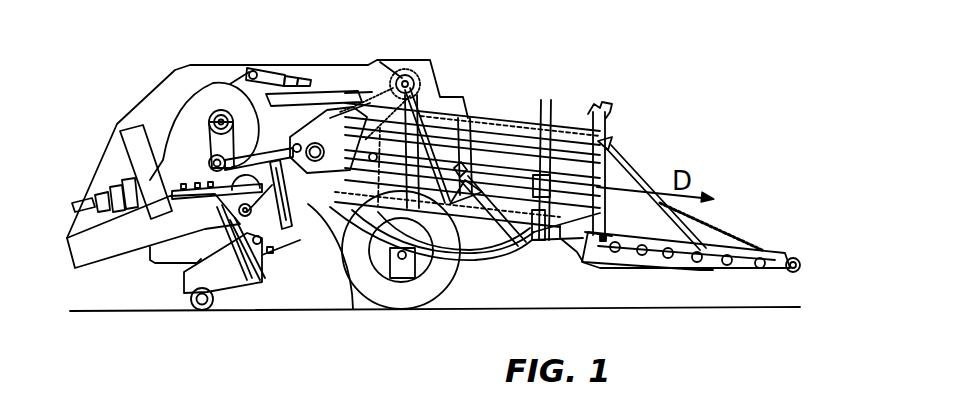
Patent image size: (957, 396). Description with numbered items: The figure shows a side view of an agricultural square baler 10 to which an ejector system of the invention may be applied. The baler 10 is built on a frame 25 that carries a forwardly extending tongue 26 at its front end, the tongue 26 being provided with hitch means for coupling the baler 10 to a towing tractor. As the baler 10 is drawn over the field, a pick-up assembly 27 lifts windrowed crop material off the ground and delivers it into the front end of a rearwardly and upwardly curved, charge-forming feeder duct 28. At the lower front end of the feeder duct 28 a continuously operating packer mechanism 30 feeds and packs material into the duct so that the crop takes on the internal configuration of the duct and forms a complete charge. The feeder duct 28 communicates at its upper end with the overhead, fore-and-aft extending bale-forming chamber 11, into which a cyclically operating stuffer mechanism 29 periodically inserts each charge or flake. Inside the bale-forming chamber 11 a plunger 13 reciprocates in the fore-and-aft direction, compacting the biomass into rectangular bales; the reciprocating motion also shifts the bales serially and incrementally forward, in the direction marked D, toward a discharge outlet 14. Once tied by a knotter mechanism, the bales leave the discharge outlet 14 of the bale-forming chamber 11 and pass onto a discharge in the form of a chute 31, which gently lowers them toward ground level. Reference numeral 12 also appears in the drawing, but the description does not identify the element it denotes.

The agricultural baler 10 is at (551, 58).
The bale-forming chamber 11 is at (557, 148).
The frame 12 is at (558, 238).
The plunger 13 is at (324, 125).
The discharge outlet 14 is at (607, 178).
The frame 25 is at (306, 176).
The tongue 26 is at (122, 246).
The pick-up assembly 27 is at (238, 296).
The feeder duct 28 is at (293, 240).
The stuffer mechanism 29 is at (300, 240).
The packer mechanism 30 is at (284, 240).
The chute 31 is at (725, 221).